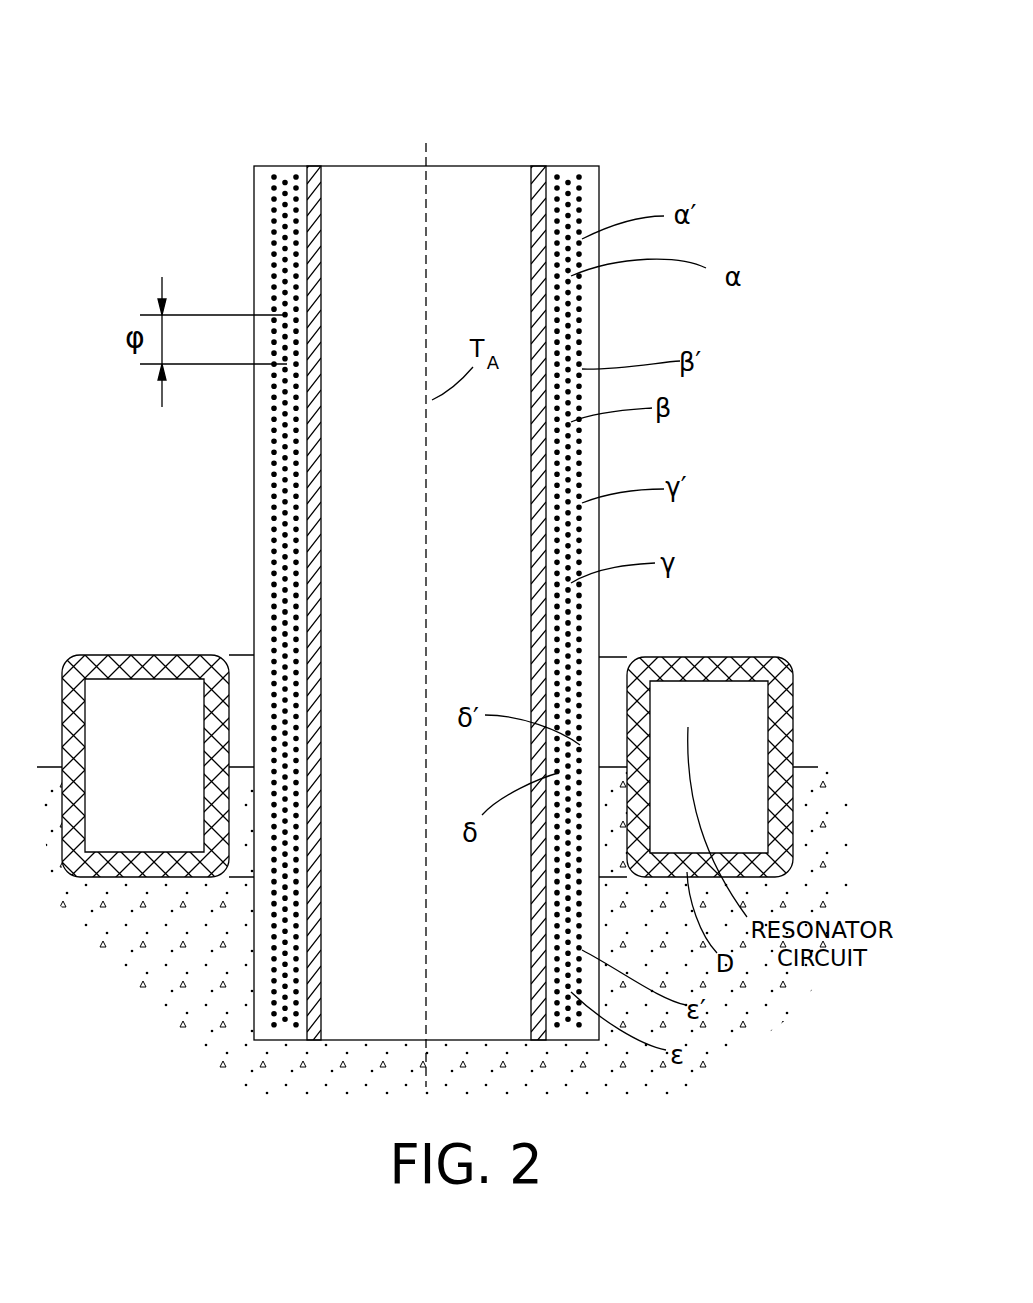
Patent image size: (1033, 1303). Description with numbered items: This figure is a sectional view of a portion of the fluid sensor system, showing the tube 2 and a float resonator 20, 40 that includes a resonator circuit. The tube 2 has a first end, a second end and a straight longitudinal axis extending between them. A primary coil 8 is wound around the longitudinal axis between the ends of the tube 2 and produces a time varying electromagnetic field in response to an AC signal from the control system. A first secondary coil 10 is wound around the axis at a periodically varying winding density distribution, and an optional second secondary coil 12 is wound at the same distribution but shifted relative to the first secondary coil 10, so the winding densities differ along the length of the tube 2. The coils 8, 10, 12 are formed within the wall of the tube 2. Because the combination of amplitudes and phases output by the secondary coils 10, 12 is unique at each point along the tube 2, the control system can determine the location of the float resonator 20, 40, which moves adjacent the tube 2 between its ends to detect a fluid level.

The tube 2 is at (533, 199).
The primary coil 8 is at (558, 172).
The first secondary coil 10 is at (570, 174).
The second secondary coil 12 is at (582, 176).
The float resonator 20 is at (737, 731).
The float resonator 40 is at (727, 681).